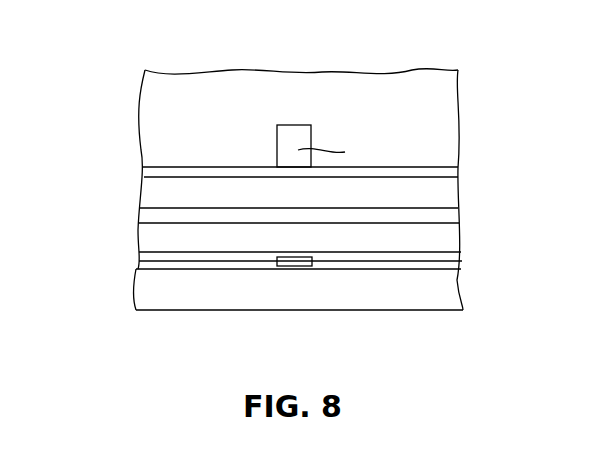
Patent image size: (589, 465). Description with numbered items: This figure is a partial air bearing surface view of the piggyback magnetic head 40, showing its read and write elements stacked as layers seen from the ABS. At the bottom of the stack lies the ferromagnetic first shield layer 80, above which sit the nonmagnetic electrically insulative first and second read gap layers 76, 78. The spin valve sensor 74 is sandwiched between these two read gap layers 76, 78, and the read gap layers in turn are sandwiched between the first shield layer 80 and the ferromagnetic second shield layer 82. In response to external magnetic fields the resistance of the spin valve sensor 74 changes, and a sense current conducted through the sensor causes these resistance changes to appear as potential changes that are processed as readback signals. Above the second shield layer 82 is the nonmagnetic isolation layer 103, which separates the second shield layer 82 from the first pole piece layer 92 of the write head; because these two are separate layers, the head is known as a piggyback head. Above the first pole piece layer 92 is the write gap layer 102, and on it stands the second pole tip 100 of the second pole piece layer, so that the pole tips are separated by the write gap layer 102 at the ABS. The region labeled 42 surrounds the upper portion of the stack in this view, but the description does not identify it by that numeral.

The piggyback magnetic head 40 is at (478, 85).
The overcoat layer 42 is at (150, 99).
The spin valve sensor 74 is at (292, 263).
The first read gap layer 76 is at (202, 269).
The second read gap layer 78 is at (418, 258).
The first shield layer 80 is at (450, 293).
The second shield layer 82 is at (146, 242).
The first pole piece layer 92 is at (148, 190).
The second pole tip 100 is at (290, 135).
The write gap layer 102 is at (213, 168).
The nonmagnetic isolation layer 103 is at (450, 217).